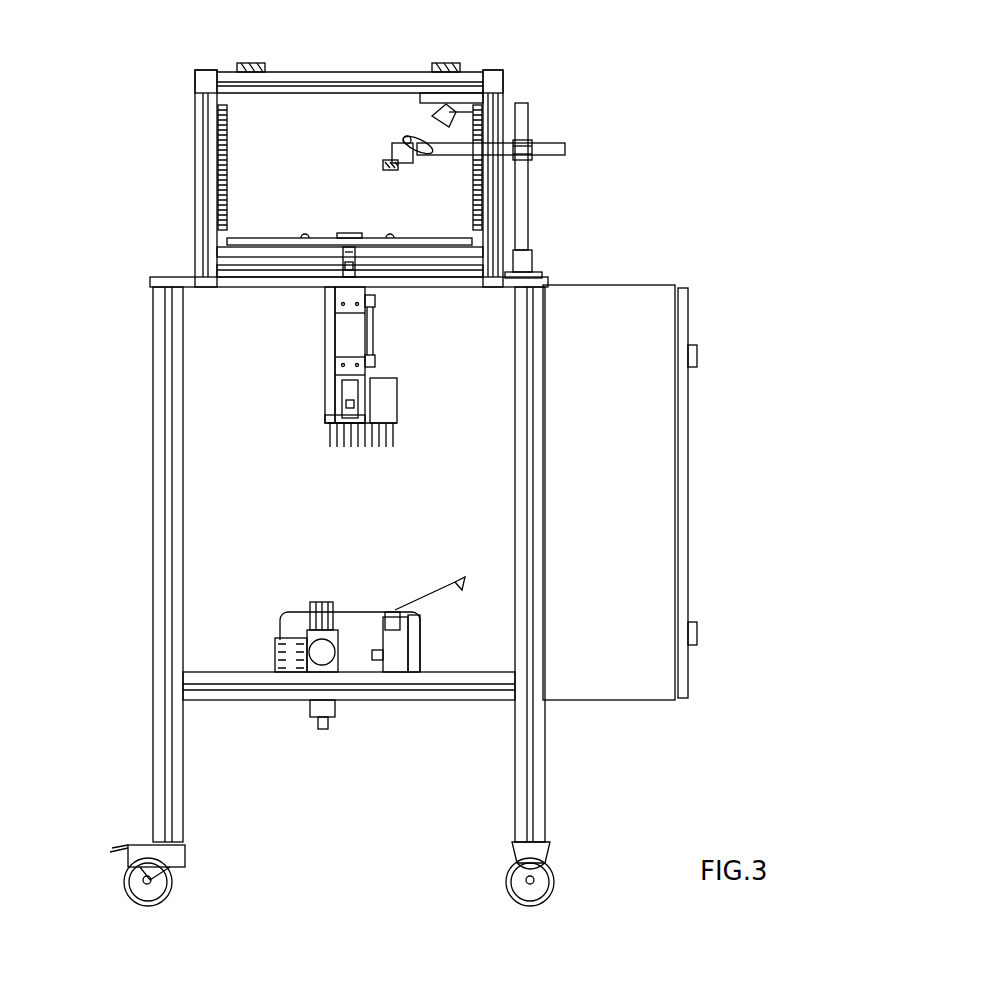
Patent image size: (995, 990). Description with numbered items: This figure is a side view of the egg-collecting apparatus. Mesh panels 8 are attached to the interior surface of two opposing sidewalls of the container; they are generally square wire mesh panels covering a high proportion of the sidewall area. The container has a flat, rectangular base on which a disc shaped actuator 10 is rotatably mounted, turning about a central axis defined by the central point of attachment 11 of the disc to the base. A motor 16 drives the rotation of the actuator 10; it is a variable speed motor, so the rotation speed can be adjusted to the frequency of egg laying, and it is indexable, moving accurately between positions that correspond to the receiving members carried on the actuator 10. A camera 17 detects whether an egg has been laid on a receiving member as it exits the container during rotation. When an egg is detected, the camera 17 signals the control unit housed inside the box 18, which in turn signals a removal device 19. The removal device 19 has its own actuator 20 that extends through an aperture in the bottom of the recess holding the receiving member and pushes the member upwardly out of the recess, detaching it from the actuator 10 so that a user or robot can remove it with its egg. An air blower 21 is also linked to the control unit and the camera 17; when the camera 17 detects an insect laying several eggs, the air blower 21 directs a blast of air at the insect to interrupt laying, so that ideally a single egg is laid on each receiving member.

The mesh panels 8 is at (225, 167).
The actuator 10 is at (255, 237).
The central point of attachment 11 is at (345, 230).
The motor 16 is at (386, 405).
The camera 17 is at (388, 160).
The box 18 is at (633, 470).
The removal device 19 is at (352, 330).
The actuator 20 is at (345, 258).
The air blower 21 is at (487, 117).